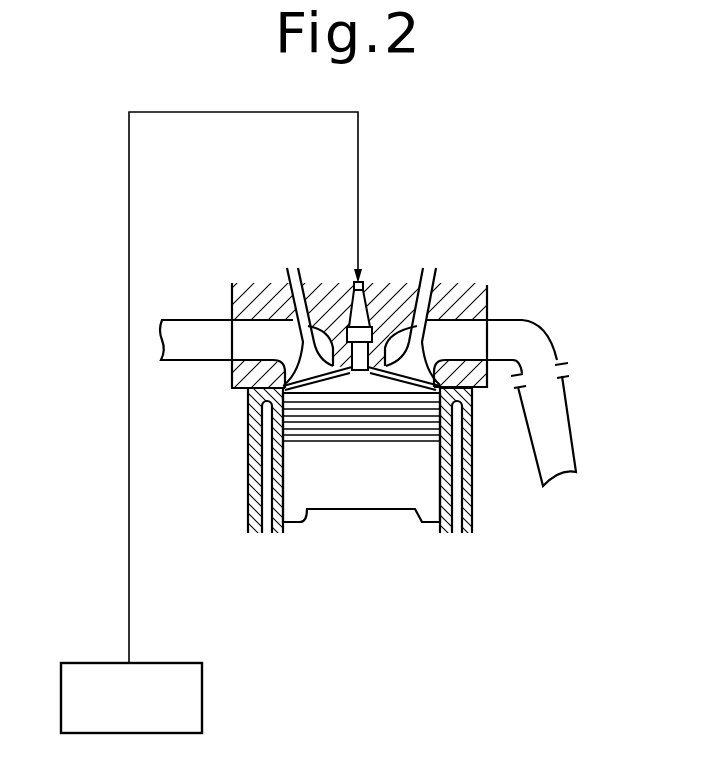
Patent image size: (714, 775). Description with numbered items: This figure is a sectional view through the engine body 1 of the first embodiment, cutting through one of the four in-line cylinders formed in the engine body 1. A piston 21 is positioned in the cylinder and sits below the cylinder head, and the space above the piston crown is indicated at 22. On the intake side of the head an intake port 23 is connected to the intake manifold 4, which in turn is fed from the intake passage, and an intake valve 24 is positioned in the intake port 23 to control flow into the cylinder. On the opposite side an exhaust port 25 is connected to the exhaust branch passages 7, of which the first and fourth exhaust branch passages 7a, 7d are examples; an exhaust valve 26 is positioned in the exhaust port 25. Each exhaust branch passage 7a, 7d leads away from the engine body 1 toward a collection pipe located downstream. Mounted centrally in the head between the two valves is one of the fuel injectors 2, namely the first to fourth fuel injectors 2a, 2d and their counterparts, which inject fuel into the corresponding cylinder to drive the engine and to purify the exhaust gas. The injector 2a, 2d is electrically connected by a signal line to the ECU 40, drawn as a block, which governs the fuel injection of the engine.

The engine body 1 is at (482, 500).
The fuel injectors 2 is at (319, 279).
The first fuel injector 2a is at (319, 279).
The fourth fuel injector 2d is at (349, 303).
The intake manifold 4 is at (195, 364).
The exhaust branch passages 7 is at (556, 372).
The first exhaust branch passage 7a is at (556, 372).
The fourth exhaust branch passage 7d is at (518, 320).
The piston 21 is at (397, 493).
The combustion chamber 22 is at (337, 383).
The intake port 23 is at (249, 330).
The intake valve 24 is at (292, 291).
The exhaust port 25 is at (460, 330).
The exhaust valve 26 is at (422, 292).
The ECU 40 is at (203, 697).